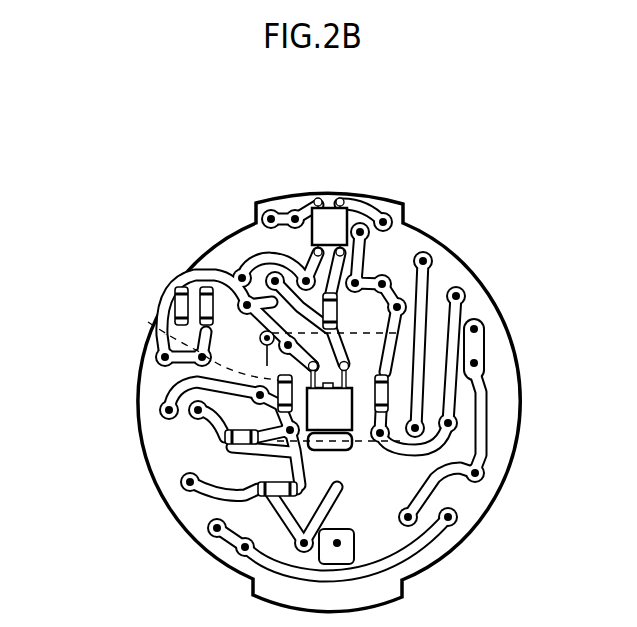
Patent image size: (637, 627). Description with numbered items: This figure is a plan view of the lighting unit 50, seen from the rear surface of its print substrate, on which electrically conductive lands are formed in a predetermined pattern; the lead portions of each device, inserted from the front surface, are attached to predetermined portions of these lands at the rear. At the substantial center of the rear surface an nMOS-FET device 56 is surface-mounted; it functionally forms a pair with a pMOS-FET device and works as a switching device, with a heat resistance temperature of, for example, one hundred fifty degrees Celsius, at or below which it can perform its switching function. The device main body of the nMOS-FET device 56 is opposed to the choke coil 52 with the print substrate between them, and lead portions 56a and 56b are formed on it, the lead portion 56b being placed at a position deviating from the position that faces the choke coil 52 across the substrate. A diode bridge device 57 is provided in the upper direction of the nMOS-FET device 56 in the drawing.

The lighting unit 50 is at (516, 223).
The choke coil 52 is at (148, 322).
The nMOS-FET device 56 is at (340, 413).
The lead portion 56a is at (352, 400).
The lead portion 56b is at (352, 441).
The diode bridge device 57 is at (353, 233).